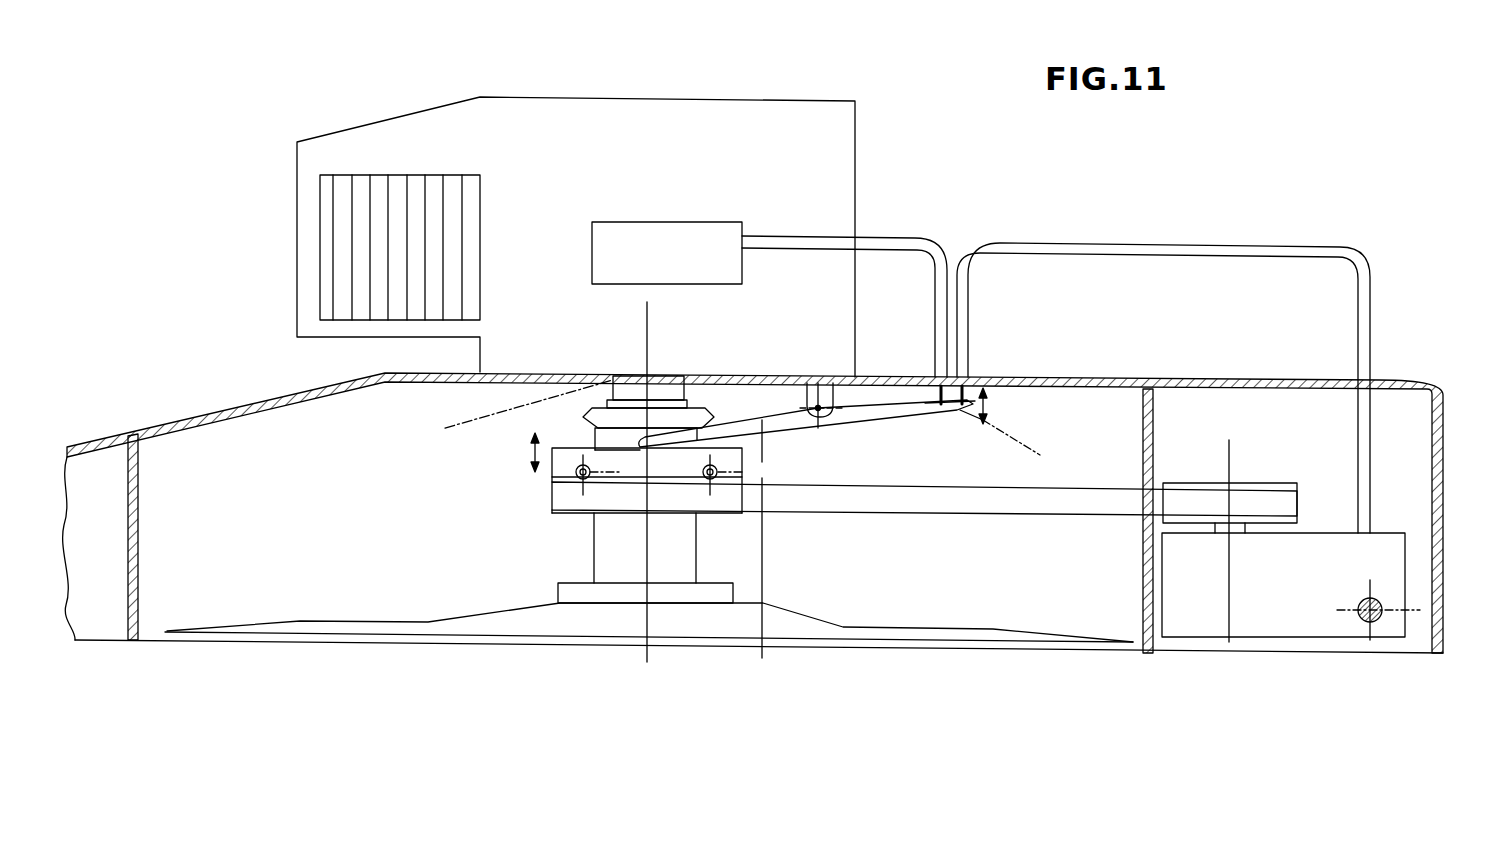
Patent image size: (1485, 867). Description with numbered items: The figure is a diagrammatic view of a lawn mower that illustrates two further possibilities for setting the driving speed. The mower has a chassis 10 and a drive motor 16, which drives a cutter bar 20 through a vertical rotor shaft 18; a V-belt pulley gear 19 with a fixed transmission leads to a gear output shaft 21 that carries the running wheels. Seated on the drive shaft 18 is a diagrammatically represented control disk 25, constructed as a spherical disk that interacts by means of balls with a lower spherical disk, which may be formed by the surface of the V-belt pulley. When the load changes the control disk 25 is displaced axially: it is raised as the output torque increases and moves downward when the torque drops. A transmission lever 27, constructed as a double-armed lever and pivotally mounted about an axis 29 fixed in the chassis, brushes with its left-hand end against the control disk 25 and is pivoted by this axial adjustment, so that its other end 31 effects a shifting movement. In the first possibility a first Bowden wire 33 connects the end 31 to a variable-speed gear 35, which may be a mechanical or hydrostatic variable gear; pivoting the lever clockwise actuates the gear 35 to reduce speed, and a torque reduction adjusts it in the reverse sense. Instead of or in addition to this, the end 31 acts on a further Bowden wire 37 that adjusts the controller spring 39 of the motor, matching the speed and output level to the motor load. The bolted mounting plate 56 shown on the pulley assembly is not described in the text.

The chassis 10 is at (217, 413).
The drive motor 16 is at (774, 198).
The vertical rotor shaft 18 is at (445, 428).
The V-belt pulley gear 19 is at (740, 534).
The cutter bar 20 is at (293, 627).
The gear output shaft 21 is at (1376, 616).
The control disk 25 is at (567, 458).
The transmission lever 27 is at (757, 578).
The axis 29 is at (815, 384).
The end of the transmission lever 31 is at (1020, 445).
The first Bowden wire 33 is at (968, 386).
The variable-speed gear 35 is at (1278, 605).
The further Bowden wire 37 is at (937, 397).
The controller spring 39 is at (667, 250).
The bolt plate 56 is at (800, 472).